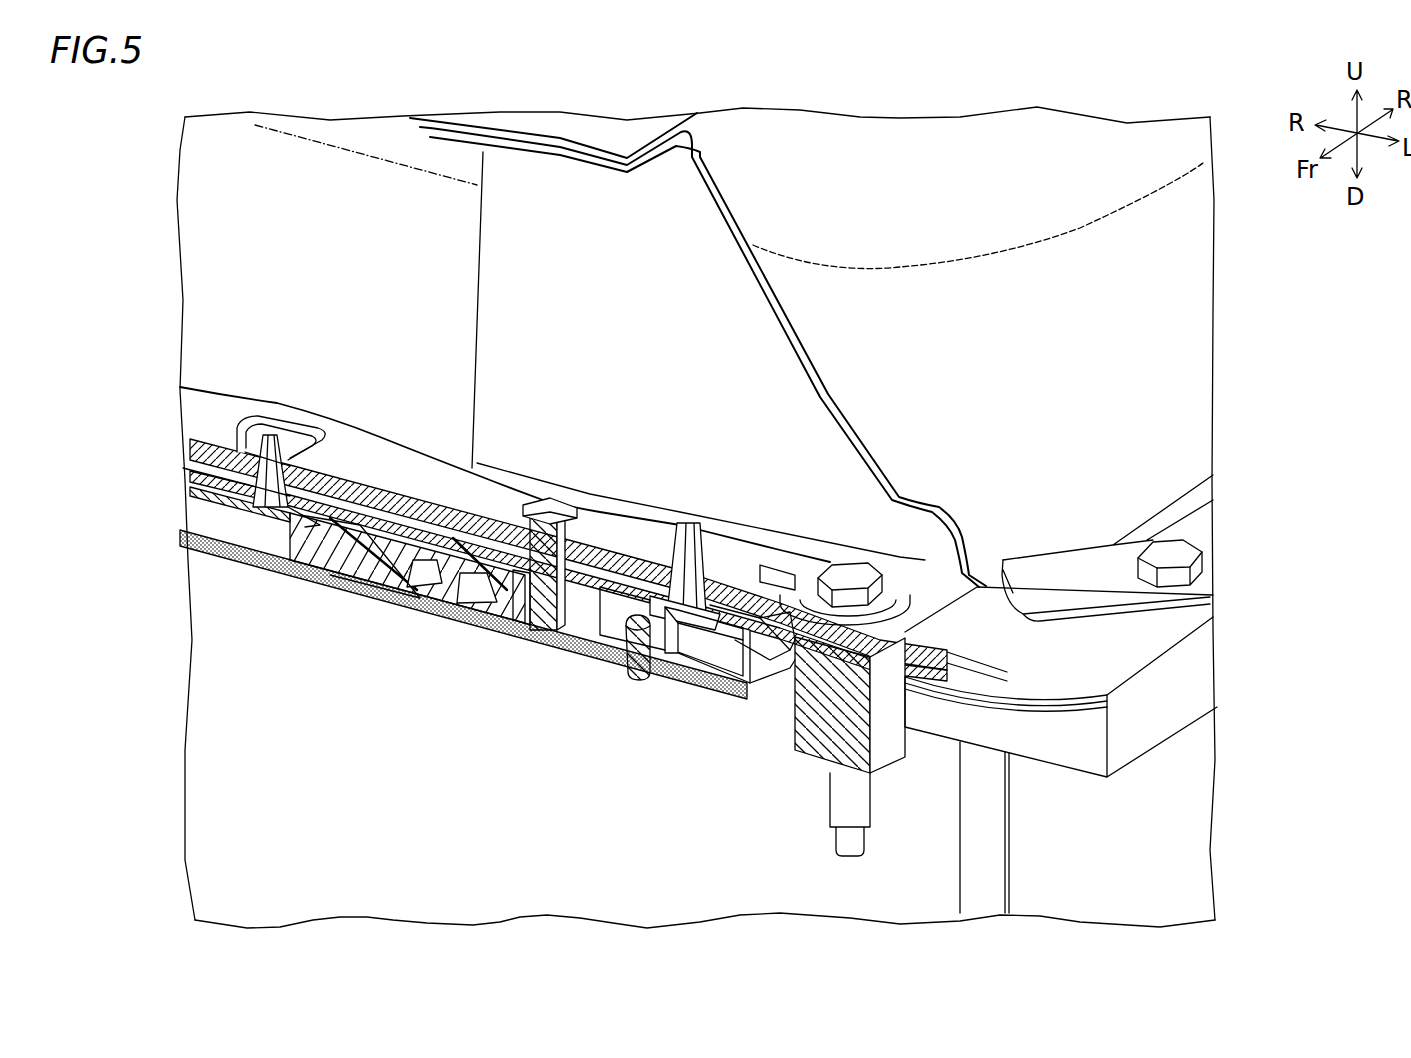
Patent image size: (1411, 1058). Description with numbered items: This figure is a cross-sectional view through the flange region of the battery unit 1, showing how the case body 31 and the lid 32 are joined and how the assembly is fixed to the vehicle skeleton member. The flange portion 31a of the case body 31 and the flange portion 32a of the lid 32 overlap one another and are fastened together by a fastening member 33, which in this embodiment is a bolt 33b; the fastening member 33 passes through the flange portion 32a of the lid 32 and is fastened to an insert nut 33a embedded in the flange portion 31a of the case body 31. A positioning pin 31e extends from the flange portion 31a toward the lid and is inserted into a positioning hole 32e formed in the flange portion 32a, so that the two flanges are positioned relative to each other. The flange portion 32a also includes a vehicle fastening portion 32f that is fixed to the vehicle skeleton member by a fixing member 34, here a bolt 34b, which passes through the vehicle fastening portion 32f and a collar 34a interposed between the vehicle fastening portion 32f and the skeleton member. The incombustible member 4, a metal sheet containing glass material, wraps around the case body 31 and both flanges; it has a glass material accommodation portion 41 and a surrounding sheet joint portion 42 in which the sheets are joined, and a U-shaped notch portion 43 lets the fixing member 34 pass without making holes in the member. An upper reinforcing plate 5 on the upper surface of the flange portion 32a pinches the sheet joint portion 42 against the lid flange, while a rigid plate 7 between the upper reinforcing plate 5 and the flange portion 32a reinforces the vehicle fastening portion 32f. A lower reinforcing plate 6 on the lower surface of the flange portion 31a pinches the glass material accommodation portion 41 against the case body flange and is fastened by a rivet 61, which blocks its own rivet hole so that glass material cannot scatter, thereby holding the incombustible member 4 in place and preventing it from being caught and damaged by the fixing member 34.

The battery unit 1 is at (1066, 98).
The incombustible member 4 is at (535, 605).
The upper reinforcing plate 5 is at (420, 473).
The lower reinforcing plate 6 is at (720, 690).
The rigid plate 7 is at (743, 332).
The case body 31 is at (237, 857).
The flange portion 31a is at (352, 575).
The positioning pin 31e is at (280, 432).
The lid 32 is at (257, 238).
The flange portion 32a is at (190, 466).
The positioning hole 32e is at (238, 560).
The vehicle fastening portion 32f is at (773, 688).
The fastening member 33 is at (548, 505).
The insert nut 33a is at (512, 615).
The bolt 33b is at (1172, 548).
The fixing member 34 is at (881, 591).
The collar 34a is at (893, 753).
The bolt 34b is at (850, 705).
The glass material accommodation portion 41 is at (428, 615).
The sheet joint portion 42 is at (795, 560).
The notch portion 43 is at (815, 565).
The rivet 61 is at (636, 682).